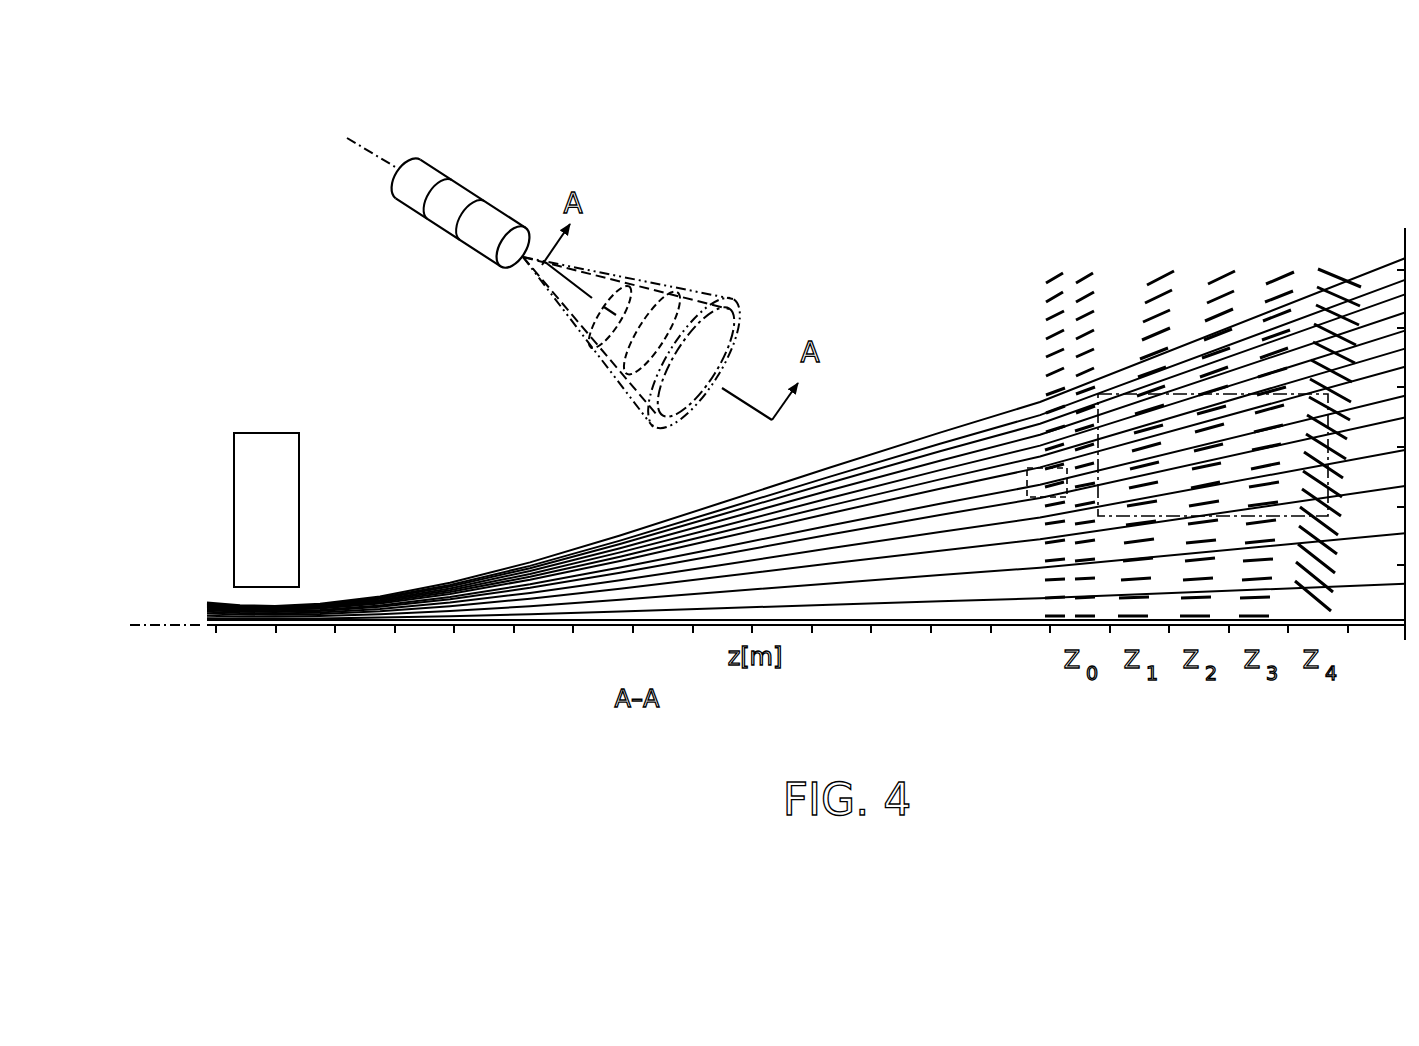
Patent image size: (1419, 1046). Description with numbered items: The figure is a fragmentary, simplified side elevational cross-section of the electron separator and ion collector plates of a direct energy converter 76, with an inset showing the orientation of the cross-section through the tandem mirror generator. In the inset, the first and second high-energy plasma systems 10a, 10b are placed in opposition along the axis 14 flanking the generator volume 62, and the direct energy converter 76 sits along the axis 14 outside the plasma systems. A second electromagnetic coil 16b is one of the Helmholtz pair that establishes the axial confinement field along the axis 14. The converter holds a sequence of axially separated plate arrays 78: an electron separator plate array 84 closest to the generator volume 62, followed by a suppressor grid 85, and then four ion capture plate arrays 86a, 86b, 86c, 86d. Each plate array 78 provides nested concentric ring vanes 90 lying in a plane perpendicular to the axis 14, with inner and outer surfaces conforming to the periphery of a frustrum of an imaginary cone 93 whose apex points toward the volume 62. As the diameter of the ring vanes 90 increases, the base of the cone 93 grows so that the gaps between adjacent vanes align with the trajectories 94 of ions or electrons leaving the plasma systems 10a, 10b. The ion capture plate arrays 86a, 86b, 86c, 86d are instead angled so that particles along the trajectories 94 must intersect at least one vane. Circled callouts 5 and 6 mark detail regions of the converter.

The first high-energy plasma system 10a is at (422, 180).
The second high-energy plasma system 10b is at (480, 246).
The axis 14 is at (165, 625).
The generator volume 62 is at (180, 421).
The second electromagnetic coil 16b is at (267, 433).
The direct energy converter 76 is at (1310, 174).
The plate arrays 78 is at (1070, 263).
The ring vanes 90 is at (664, 300).
The imaginary cone 93 is at (705, 314).
The trajectory 94 is at (633, 563).
The electron separator plate array 84 is at (1043, 650).
The suppressor grid 85 is at (1079, 693).
The first ion capture plate array 86a is at (1138, 693).
The second ion capture plate array 86b is at (1203, 693).
The third ion capture plate array 86c is at (1262, 693).
The fourth ion capture plate array 86d is at (1320, 693).
The detail callout FIG. 5 is at (1027, 482).
The detail callout FIG. 6 is at (1340, 463).